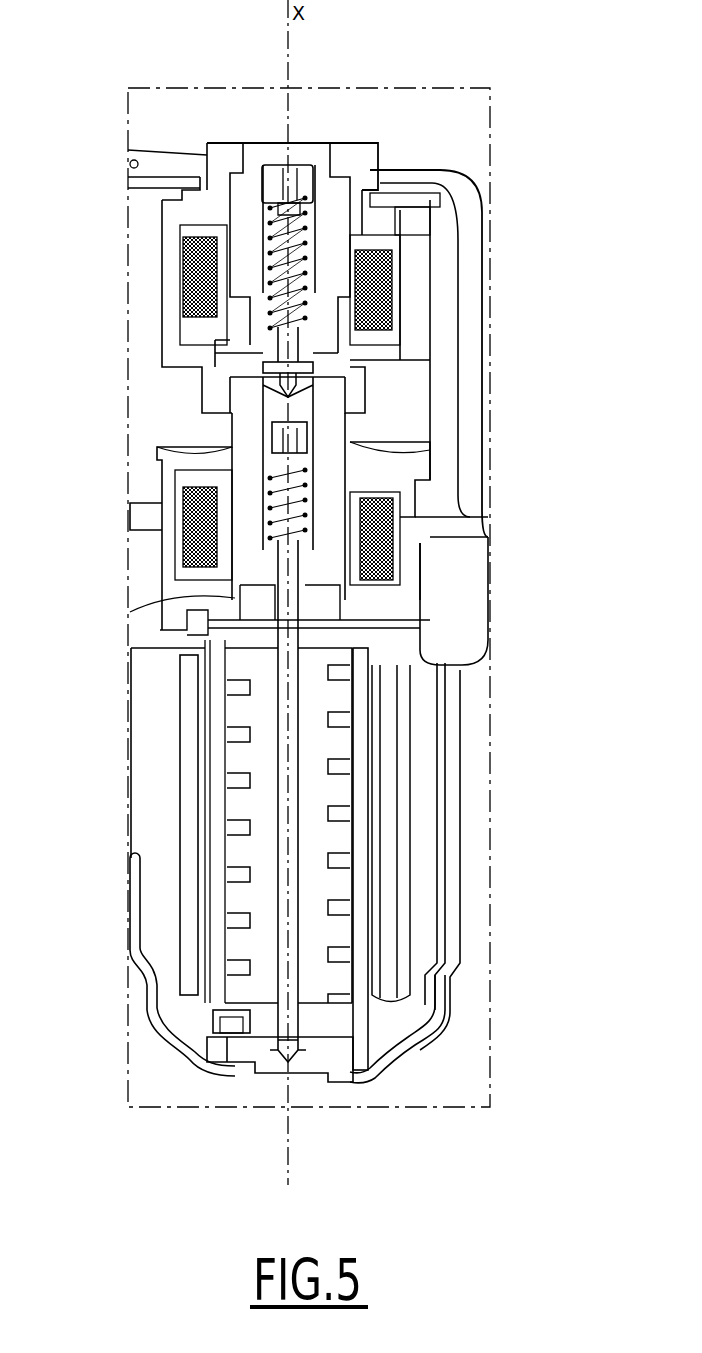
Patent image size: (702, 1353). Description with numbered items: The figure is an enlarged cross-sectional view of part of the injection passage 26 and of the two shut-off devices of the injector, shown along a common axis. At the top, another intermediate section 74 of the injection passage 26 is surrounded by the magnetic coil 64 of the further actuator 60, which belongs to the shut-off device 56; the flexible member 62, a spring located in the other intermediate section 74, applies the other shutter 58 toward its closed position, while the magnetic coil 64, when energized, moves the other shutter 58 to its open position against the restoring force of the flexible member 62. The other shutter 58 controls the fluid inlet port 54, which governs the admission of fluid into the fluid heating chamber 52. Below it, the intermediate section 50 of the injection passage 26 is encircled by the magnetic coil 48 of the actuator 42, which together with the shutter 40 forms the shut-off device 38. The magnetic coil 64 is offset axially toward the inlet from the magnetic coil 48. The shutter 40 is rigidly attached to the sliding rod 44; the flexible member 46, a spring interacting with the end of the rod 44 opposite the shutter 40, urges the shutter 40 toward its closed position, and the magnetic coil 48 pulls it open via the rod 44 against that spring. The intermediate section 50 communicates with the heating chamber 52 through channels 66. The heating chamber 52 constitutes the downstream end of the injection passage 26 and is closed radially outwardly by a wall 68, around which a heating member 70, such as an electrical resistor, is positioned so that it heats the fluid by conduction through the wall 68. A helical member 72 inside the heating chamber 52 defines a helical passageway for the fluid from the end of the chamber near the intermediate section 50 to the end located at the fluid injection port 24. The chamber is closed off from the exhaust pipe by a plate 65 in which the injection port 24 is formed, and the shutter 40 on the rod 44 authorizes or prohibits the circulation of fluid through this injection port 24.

The fluid injection port 24 is at (297, 1053).
The injection passage 26 is at (316, 160).
The shut-off device 38 is at (200, 524).
The shutter 40 is at (262, 1062).
The actuator 42 is at (422, 566).
The sliding rod 44 is at (275, 785).
The flexible member 46 is at (340, 490).
The magnetic coil 48 is at (402, 535).
The intermediate section 50 is at (210, 445).
The fluid heating chamber 52 is at (350, 770).
The fluid inlet port 54 is at (240, 390).
The shut-off device 56 is at (192, 287).
The shutter 58 is at (340, 367).
The actuator 60 is at (402, 300).
The flexible member 62 is at (380, 170).
The magnetic coil 64 is at (398, 274).
The plate 65 is at (238, 1073).
The channels 66 is at (200, 625).
The wall 68 is at (372, 840).
The heating member 70 is at (385, 890).
The helical member 72 is at (235, 900).
The intermediate section 74 is at (285, 157).